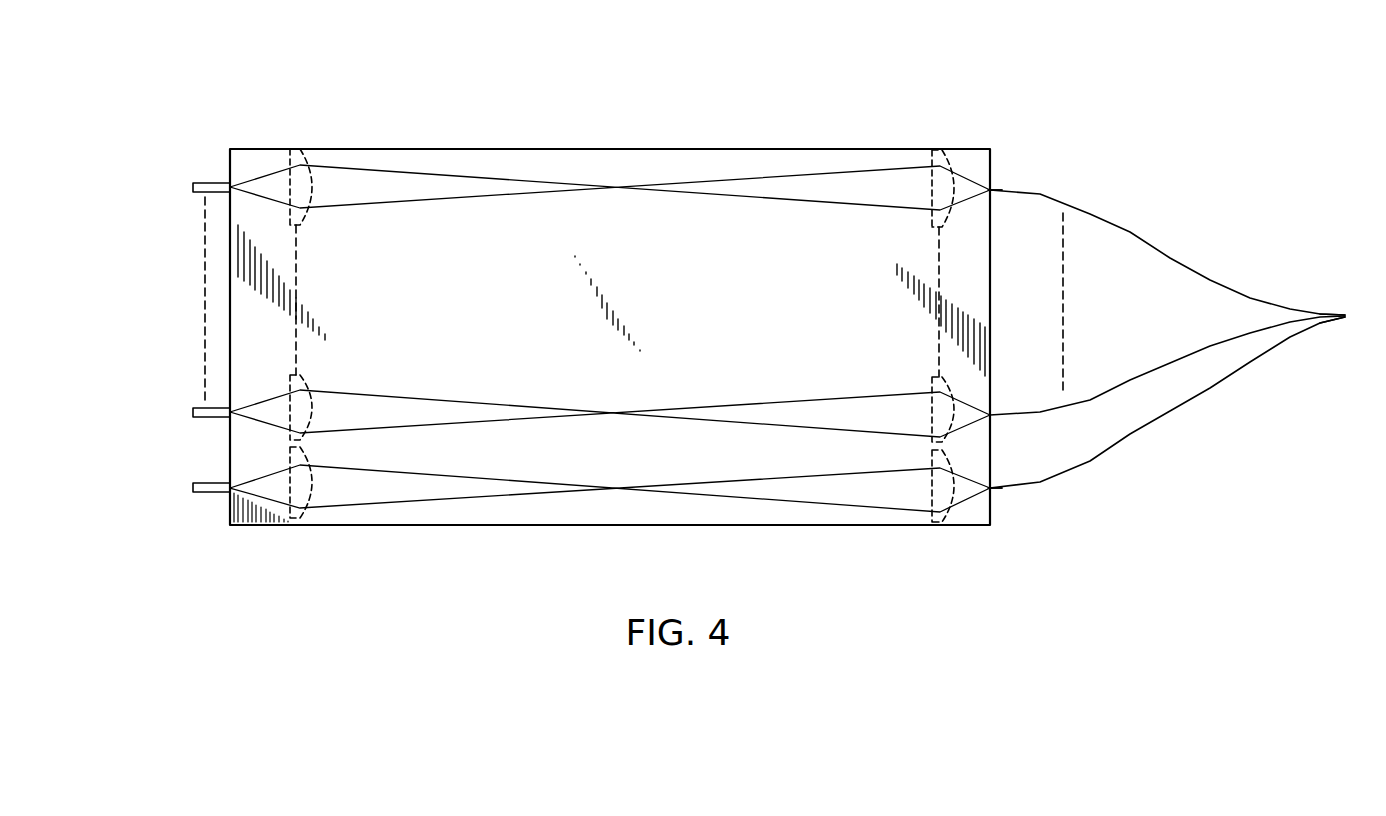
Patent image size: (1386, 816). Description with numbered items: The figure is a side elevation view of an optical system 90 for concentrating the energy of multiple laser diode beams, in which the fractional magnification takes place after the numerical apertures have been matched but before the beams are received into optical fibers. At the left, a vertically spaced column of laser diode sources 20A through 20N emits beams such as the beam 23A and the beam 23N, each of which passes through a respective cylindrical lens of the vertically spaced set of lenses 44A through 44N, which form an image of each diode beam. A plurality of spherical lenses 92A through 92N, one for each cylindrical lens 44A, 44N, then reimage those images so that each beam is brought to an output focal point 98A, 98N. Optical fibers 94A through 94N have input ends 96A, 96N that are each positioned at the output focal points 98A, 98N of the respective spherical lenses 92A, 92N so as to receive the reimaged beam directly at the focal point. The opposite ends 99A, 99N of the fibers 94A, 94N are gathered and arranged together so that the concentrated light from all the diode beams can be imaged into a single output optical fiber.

The optical system 90 is at (1126, 116).
The light source N 20N is at (212, 182).
The light source A 20A is at (203, 494).
The collimating lens N 23N is at (284, 166).
The beam 23A is at (266, 517).
The cylindrical lens 44N is at (310, 173).
The cylindrical lens 44A is at (310, 500).
The spherical lens 92N is at (932, 188).
The spherical lens 92A is at (930, 513).
The fiber end 96N is at (990, 190).
The fiber end 96A is at (990, 488).
The output focal point 98N is at (990, 190).
The output focal point 98A is at (990, 488).
The optical fiber 94N is at (1126, 223).
The optical fiber 94A is at (1123, 441).
The opposite fiber end 99N is at (1324, 313).
The opposite fiber end 99A is at (1318, 320).